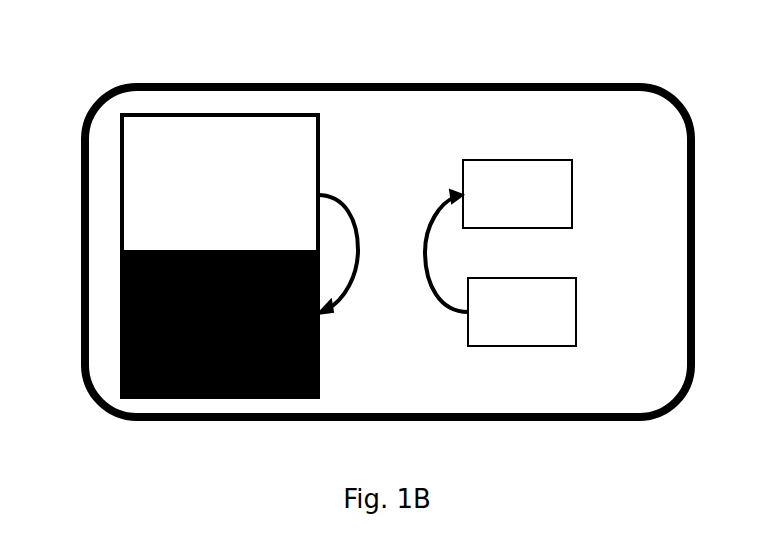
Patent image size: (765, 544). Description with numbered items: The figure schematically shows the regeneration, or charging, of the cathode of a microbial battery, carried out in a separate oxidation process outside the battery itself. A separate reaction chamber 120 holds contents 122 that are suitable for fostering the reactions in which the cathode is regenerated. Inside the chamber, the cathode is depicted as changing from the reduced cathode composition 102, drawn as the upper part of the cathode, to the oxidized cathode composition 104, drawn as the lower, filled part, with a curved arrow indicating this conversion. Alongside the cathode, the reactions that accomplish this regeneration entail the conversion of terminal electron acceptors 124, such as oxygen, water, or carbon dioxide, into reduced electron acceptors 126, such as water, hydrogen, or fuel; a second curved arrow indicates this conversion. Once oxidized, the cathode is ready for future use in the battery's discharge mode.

The reaction chamber 120 is at (102, 96).
The contents 122 is at (557, 123).
The reduced cathode composition 102 is at (193, 200).
The oxidized cathode composition 104 is at (193, 335).
The terminal electron acceptors 124 is at (497, 326).
The reduced electron acceptors 126 is at (495, 209).